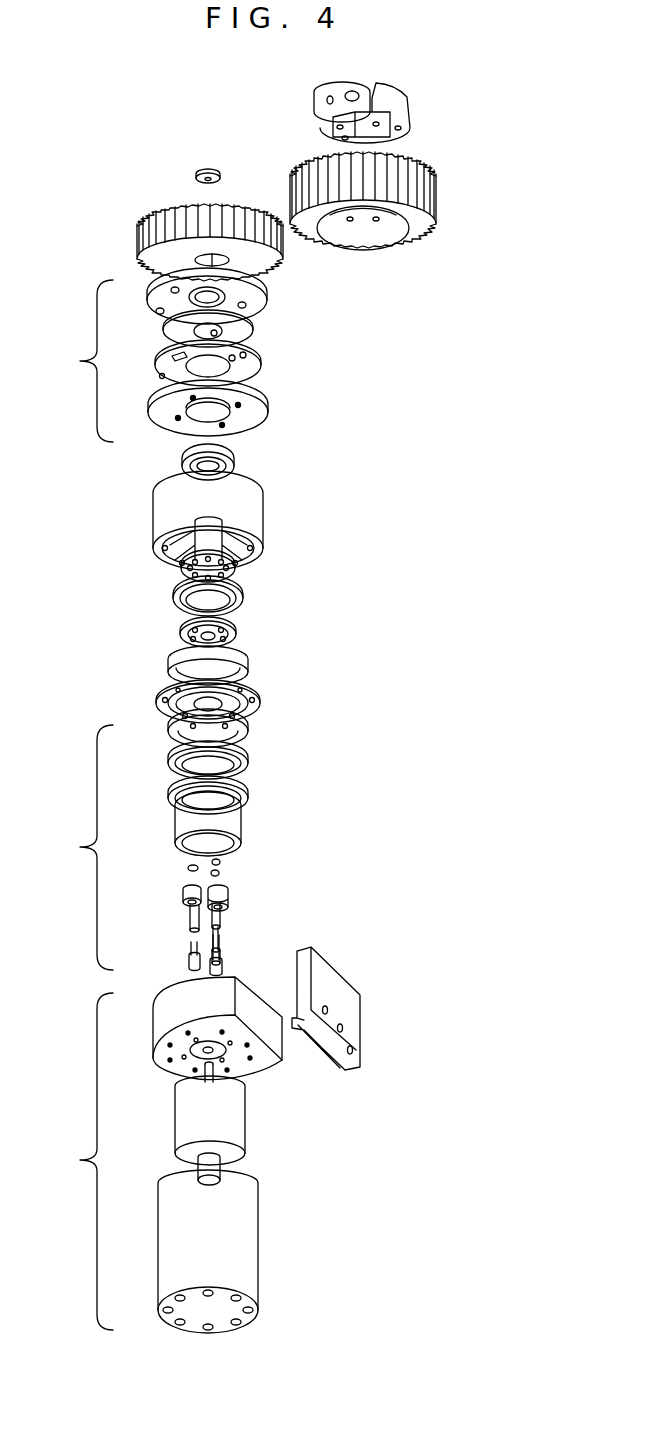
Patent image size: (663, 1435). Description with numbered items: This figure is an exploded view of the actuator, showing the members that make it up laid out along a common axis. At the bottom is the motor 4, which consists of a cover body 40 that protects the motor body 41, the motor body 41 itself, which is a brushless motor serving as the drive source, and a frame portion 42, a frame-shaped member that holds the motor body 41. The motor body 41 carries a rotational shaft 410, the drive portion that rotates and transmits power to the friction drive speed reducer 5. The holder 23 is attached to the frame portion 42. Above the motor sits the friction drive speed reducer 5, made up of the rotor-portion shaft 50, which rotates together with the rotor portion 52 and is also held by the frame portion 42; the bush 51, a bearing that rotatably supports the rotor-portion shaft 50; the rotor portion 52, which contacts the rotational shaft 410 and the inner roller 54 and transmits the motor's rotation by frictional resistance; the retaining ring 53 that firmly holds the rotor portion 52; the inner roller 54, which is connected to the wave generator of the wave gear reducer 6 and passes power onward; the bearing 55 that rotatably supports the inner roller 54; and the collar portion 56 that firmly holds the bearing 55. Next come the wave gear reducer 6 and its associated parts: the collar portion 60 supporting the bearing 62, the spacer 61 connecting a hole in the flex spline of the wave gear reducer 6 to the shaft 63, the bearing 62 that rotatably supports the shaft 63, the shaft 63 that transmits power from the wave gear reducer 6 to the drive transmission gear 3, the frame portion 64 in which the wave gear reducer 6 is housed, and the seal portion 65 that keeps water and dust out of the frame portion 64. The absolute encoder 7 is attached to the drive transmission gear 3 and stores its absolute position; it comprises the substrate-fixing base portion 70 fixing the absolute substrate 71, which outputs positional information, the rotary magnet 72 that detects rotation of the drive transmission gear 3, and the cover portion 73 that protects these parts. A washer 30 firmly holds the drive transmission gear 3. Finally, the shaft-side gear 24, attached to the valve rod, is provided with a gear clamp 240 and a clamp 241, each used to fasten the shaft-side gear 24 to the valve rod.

The drive transmission gear 3 is at (168, 225).
The shaft-side gear 24 is at (398, 175).
The gear clamp 240 is at (407, 110).
The clamp 241 is at (317, 93).
The washer 30 is at (208, 173).
The absolute encoder 7 is at (199, 355).
The cover portion 73 is at (267, 298).
The rotary magnet 72 is at (247, 337).
The absolute substrate 71 is at (248, 373).
The substrate-fixing base portion 70 is at (248, 417).
The seal portion 65 is at (228, 455).
The frame portion 64 is at (243, 505).
The shaft 63 is at (178, 558).
The bearing 62 is at (178, 600).
The spacer 61 is at (240, 633).
The collar portion 60 is at (185, 657).
The wave gear reducer 6 is at (258, 692).
The friction drive speed reducer 5 is at (198, 837).
The collar portion 56 is at (252, 730).
The bearing 55 is at (250, 793).
The inner roller 54 is at (235, 825).
The retaining ring 53 is at (225, 872).
The rotor portion 52 is at (190, 892).
The bush 51 is at (190, 918).
The rotor-portion shaft 50 is at (188, 948).
The holder 23 is at (337, 988).
The motor 4 is at (206, 1155).
The frame portion 42 is at (268, 1038).
The rotational shaft 410 is at (233, 1132).
The motor body 41 is at (222, 1073).
The cover body 40 is at (224, 1240).